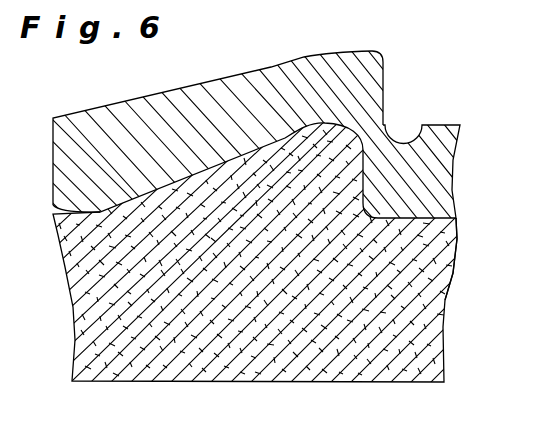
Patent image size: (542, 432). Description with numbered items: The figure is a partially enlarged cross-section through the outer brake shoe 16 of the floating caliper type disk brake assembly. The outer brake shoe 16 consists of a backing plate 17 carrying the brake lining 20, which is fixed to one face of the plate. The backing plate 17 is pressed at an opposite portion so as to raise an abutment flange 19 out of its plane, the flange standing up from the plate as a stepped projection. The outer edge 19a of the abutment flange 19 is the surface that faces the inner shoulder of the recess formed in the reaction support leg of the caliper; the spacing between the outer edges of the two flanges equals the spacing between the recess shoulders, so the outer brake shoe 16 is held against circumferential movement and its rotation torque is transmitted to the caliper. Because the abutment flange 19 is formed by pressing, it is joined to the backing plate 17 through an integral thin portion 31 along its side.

The outer brake shoe 16 is at (457, 239).
The backing plate 17 is at (442, 172).
The abutment flange 19 is at (233, 80).
The outer edge 19a is at (385, 70).
The brake lining 20 is at (443, 312).
The thin portion 31 is at (378, 105).